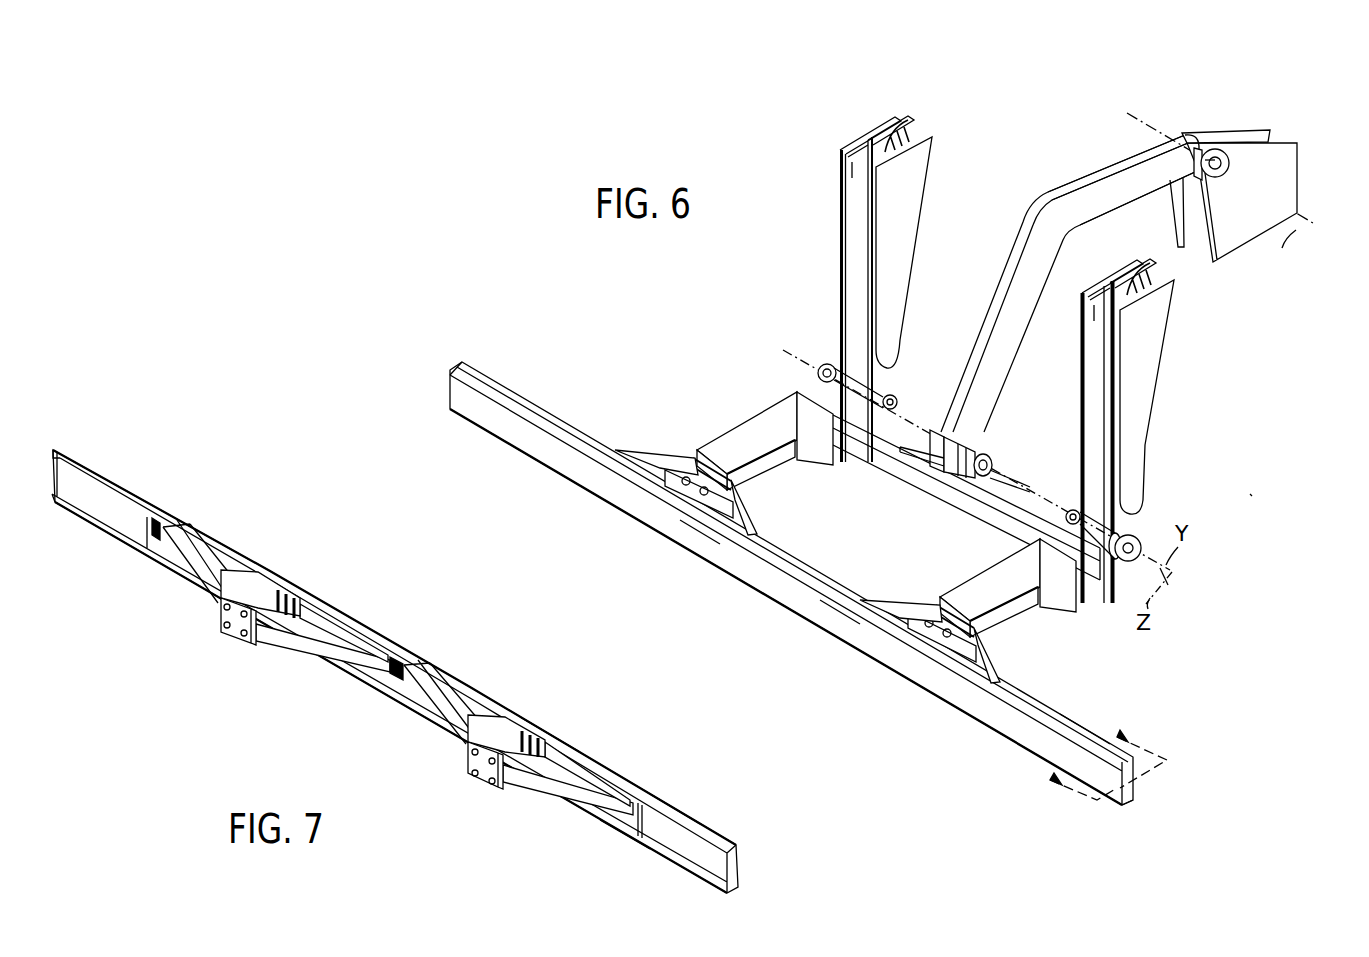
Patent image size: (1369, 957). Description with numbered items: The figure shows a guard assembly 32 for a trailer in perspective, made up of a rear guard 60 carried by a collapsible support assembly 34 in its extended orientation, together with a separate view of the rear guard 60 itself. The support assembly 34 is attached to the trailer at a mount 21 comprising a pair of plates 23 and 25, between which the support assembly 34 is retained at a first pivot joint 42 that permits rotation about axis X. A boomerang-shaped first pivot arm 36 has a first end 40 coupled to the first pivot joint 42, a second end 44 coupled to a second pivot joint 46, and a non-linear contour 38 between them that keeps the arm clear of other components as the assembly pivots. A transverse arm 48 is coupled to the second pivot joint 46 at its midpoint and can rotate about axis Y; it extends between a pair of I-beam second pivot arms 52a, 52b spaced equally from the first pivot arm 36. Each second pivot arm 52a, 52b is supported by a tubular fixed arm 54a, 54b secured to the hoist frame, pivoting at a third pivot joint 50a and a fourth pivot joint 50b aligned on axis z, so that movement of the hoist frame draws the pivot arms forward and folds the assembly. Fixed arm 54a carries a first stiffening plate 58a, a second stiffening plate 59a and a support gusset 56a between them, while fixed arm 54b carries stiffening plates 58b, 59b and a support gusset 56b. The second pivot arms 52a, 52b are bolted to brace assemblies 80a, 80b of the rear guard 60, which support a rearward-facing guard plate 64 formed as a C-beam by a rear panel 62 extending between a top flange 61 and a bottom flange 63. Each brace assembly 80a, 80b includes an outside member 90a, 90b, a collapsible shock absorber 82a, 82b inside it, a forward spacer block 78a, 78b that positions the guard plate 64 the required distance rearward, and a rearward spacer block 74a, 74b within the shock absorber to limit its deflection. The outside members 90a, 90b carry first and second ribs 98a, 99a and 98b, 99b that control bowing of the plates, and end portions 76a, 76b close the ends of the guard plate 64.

In FIG. 6, the mount 21 is at (1298, 128).
In FIG. 6, the plate 23 is at (1288, 176).
In FIG. 6, the plate 25 is at (1230, 130).
In FIG. 6, the guard assembly 32 is at (1254, 496).
In FIG. 6, the support assembly 34 is at (1190, 440).
In FIG. 6, the first pivot arm 36 is at (1103, 182).
In FIG. 6, the non-linear contour 38 is at (1036, 185).
In FIG. 6, the first end 40 is at (1172, 150).
In FIG. 6, the first pivot joint 42 is at (1257, 156).
In FIG. 6, the second end 44 is at (982, 452).
In FIG. 6, the second pivot joint 46 is at (934, 428).
In FIG. 6, the transverse arm 48 is at (930, 480).
In FIG. 6, the third pivot joint 50a is at (1142, 538).
In FIG. 6, the fourth pivot joint 50b is at (822, 365).
In FIG. 6, the second pivot arm 52a is at (1058, 614).
In FIG. 6, the second pivot arm 52b is at (720, 436).
In FIG. 6, the fixed arm 54a is at (1082, 414).
In FIG. 6, the fixed arm 54b is at (840, 243).
In FIG. 6, the support gusset 56a is at (1143, 276).
In FIG. 6, the support gusset 56b is at (903, 132).
In FIG. 6, the first stiffening plate 58a is at (1150, 374).
In FIG. 6, the stiffening plate 58b is at (905, 203).
In FIG. 6, the second stiffening plate 59a is at (1116, 280).
In FIG. 6, the second stiffening plate 59b is at (874, 140).
In FIG. 6, the rear guard 60 is at (776, 628).
In FIG. 7, the rear guard 60 is at (92, 440).
In FIG. 6, the top flange 61 is at (1088, 722).
In FIG. 7, the top flange 61 is at (545, 722).
In FIG. 6, the rear panel 62 is at (690, 540).
In FIG. 6, the bottom flange 63 is at (1136, 800).
In FIG. 7, the bottom flange 63 is at (622, 832).
In FIG. 6, the guard plate 64 is at (838, 632).
In FIG. 7, the guard plate 64 is at (676, 806).
In FIG. 7, the rearward spacer block 74a is at (258, 594).
In FIG. 7, the rearward spacer block 74b is at (502, 734).
In FIG. 7, the end plate 76a is at (106, 500).
In FIG. 7, the end plate 76b is at (674, 843).
In FIG. 7, the forward spacer block 78a is at (236, 622).
In FIG. 7, the forward spacer block 78b is at (466, 760).
In FIG. 6, the brace assembly 80a is at (952, 619).
In FIG. 7, the brace assembly 80a is at (281, 616).
In FIG. 6, the brace assembly 80b is at (718, 483).
In FIG. 7, the brace assembly 80b is at (505, 749).
In FIG. 6, the collapsible shock absorber 82a is at (914, 622).
In FIG. 7, the collapsible shock absorber 82a is at (244, 576).
In FIG. 6, the collapsible shock absorber 82b is at (672, 484).
In FIG. 7, the collapsible shock absorber 82b is at (490, 714).
In FIG. 6, the outside member 90a is at (997, 644).
In FIG. 7, the outside member 90a is at (338, 626).
In FIG. 6, the outside member 90b is at (646, 451).
In FIG. 7, the outside member 90b is at (580, 774).
In FIG. 7, the first rib 98a is at (188, 566).
In FIG. 7, the first rib 98b is at (424, 700).
In FIG. 7, the second rib 99a is at (326, 648).
In FIG. 7, the second rib 99b is at (525, 790).